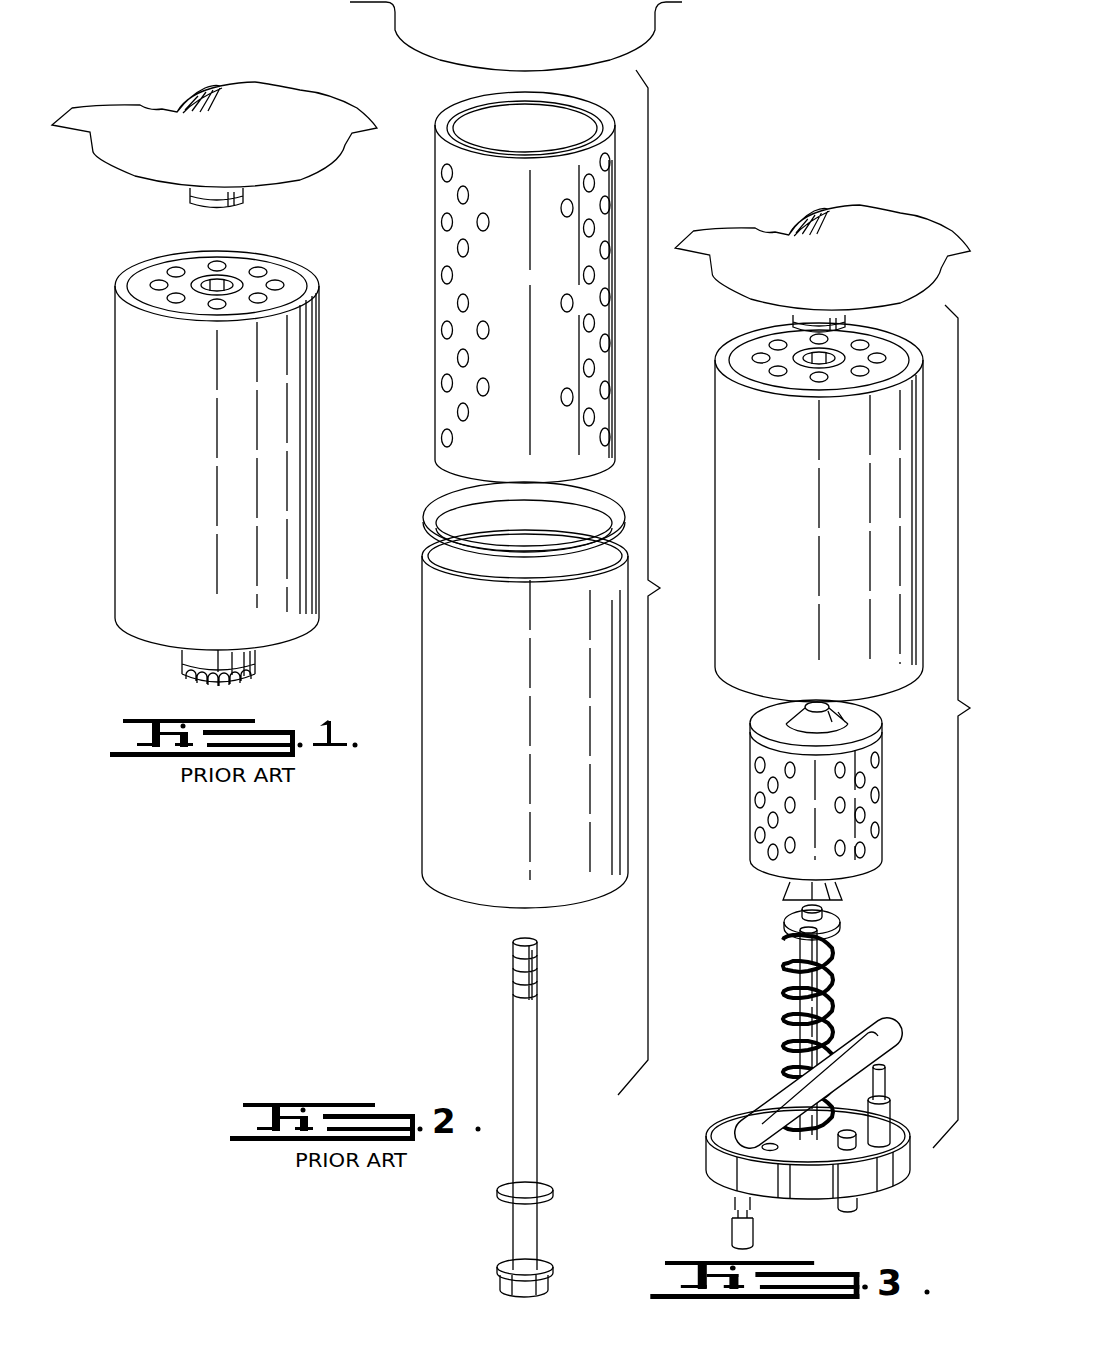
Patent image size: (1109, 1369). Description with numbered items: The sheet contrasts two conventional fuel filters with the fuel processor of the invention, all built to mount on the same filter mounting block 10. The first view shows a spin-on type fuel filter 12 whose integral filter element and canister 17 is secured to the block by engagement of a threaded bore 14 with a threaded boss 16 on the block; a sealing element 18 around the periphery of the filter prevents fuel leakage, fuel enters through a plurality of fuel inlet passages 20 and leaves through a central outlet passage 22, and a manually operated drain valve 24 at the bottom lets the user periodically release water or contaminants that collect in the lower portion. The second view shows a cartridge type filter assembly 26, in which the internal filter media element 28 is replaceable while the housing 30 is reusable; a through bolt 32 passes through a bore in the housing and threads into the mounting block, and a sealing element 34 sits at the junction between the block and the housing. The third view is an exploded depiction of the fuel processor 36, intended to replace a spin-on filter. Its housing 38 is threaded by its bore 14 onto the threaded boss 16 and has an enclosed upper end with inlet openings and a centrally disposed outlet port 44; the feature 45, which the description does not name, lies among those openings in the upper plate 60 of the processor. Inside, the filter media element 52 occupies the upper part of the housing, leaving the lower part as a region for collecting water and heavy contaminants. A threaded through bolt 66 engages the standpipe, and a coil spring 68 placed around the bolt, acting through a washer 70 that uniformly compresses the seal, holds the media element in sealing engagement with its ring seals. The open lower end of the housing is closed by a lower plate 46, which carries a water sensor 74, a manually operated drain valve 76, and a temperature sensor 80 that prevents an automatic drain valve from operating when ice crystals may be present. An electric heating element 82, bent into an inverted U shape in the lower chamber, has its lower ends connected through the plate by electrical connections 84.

In FIG. 1, the filter mounting block 10 is at (255, 103).
In FIG. 2, the filter mounting block 10 is at (628, 32).
In FIG. 3, the filter mounting block 10 is at (876, 222).
In FIG. 1, the spin-on type fuel filter 12 is at (216, 453).
In FIG. 1, the threaded bore 14 is at (198, 282).
In FIG. 3, the threaded bore 14 is at (795, 354).
In FIG. 1, the threaded boss 16 is at (243, 198).
In FIG. 3, the threaded boss 16 is at (828, 318).
In FIG. 1, the integral filter element and canister 17 is at (118, 437).
In FIG. 1, the sealing element 18 is at (300, 273).
In FIG. 1, the fuel inlet passages 20 is at (150, 286).
In FIG. 1, the central outlet passage 22 is at (228, 282).
In FIG. 1, the manually operated drain valve 24 is at (252, 660).
In FIG. 2, the cartridge type filter assembly 26 is at (535, 683).
In FIG. 2, the internal filter media element 28 is at (440, 362).
In FIG. 2, the housing 30 is at (424, 768).
In FIG. 2, the through bolt 32 is at (513, 1022).
In FIG. 2, the sealing element 34 is at (432, 516).
In FIG. 3, the fuel processor 36 is at (827, 777).
In FIG. 3, the housing 38 is at (908, 614).
In FIG. 3, the outlet port 44 is at (838, 352).
In FIG. 3, the inlet opening 45 is at (760, 376).
In FIG. 3, the lower plate 46 is at (890, 1183).
In FIG. 3, the filter media element 52 is at (862, 807).
In FIG. 3, the upper plate 60 is at (748, 358).
In FIG. 3, the threaded through bolt 66 is at (800, 982).
In FIG. 3, the coil spring 68 is at (833, 963).
In FIG. 3, the washer 70 is at (832, 917).
In FIG. 3, the water sensor 74 is at (884, 1100).
In FIG. 3, the manually operated drain valve 76 is at (858, 1142).
In FIG. 3, the temperature sensor 80 is at (760, 1147).
In FIG. 3, the electric heating element 82 is at (891, 1022).
In FIG. 3, the electrical connections 84 is at (734, 1204).